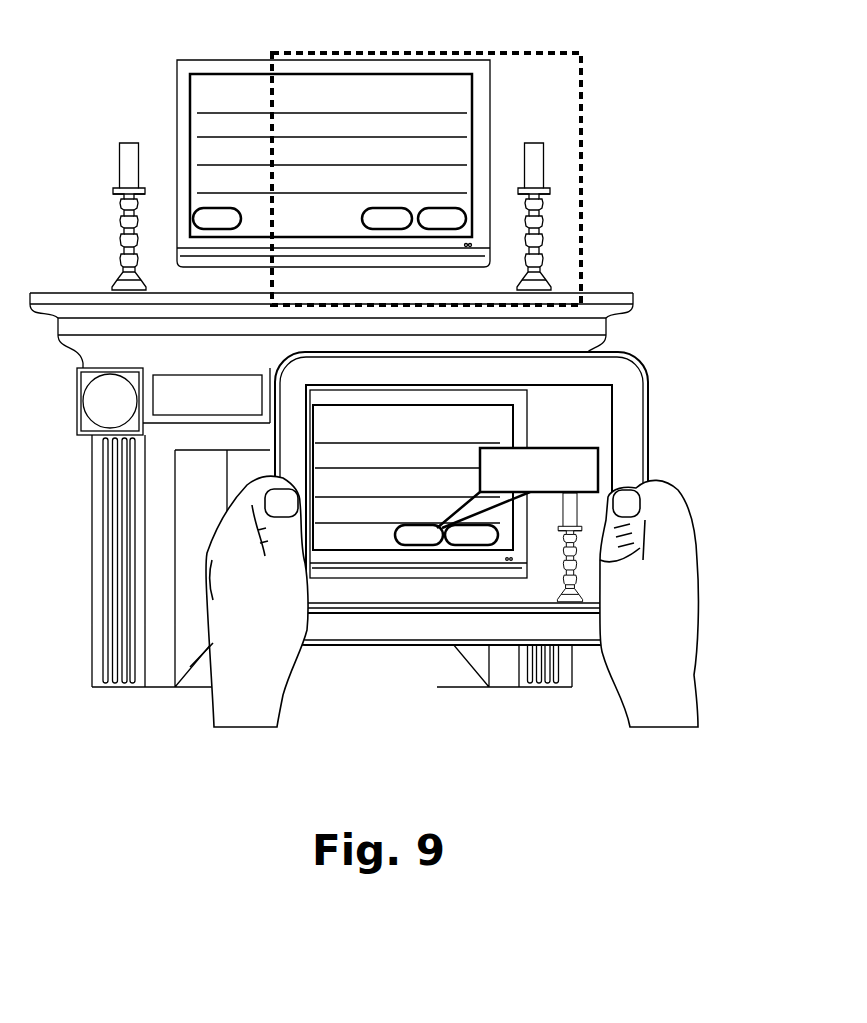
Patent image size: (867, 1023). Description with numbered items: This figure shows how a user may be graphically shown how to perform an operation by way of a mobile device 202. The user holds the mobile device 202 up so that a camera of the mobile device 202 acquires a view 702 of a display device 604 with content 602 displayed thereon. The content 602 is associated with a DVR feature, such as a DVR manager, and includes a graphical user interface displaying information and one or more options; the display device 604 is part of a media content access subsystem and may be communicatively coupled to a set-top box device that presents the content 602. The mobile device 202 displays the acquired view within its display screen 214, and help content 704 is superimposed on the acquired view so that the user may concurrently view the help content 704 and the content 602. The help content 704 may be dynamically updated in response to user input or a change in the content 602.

The mobile device 202 is at (585, 350).
The display screen 214 is at (613, 395).
The content 602 is at (207, 92).
The display device 604 is at (243, 60).
The view 702 is at (581, 127).
The help content 704 is at (598, 460).